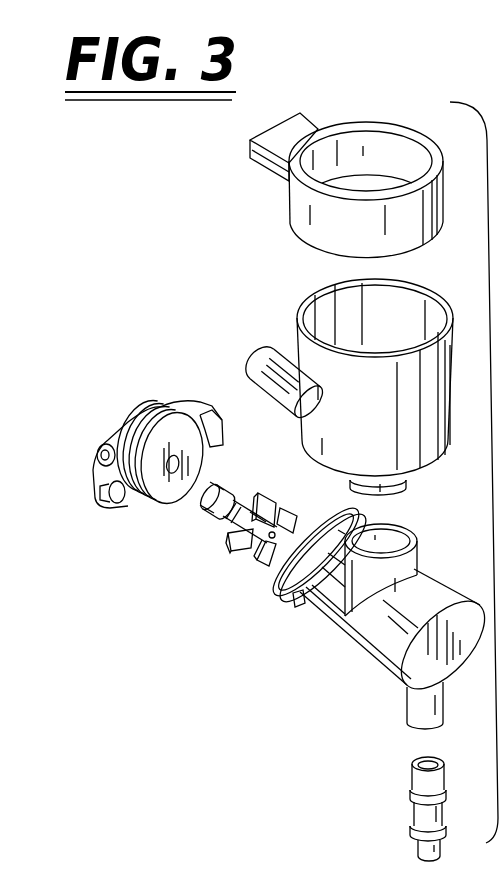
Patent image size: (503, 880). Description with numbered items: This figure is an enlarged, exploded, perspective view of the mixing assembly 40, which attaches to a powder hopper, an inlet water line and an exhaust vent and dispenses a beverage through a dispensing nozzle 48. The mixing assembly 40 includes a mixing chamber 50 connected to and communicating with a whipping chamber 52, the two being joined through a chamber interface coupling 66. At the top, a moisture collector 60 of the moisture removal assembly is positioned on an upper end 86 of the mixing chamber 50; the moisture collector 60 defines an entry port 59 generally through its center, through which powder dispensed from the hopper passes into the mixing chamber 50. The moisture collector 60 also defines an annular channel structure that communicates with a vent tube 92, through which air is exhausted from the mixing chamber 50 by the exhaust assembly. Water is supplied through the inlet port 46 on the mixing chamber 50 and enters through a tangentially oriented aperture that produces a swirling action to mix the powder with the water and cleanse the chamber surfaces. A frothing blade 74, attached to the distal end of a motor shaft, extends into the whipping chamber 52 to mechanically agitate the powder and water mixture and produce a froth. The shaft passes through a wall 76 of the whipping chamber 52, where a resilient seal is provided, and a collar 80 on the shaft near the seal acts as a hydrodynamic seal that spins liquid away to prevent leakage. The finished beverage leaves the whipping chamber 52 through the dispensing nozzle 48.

The mixing assembly 40 is at (233, 342).
The inlet port 46 is at (282, 390).
The dispensing nozzle 48 is at (415, 792).
The mixing chamber 50 is at (296, 333).
The whipping chamber 52 is at (343, 643).
The entry port 59 is at (388, 147).
The moisture collector 60 is at (318, 225).
The chamber interface coupling 66 is at (405, 567).
The frothing blade 74 is at (231, 545).
The wall 76 is at (188, 440).
The collar 80 is at (220, 485).
The upper end 86 is at (380, 353).
The vent tube 92 is at (262, 160).